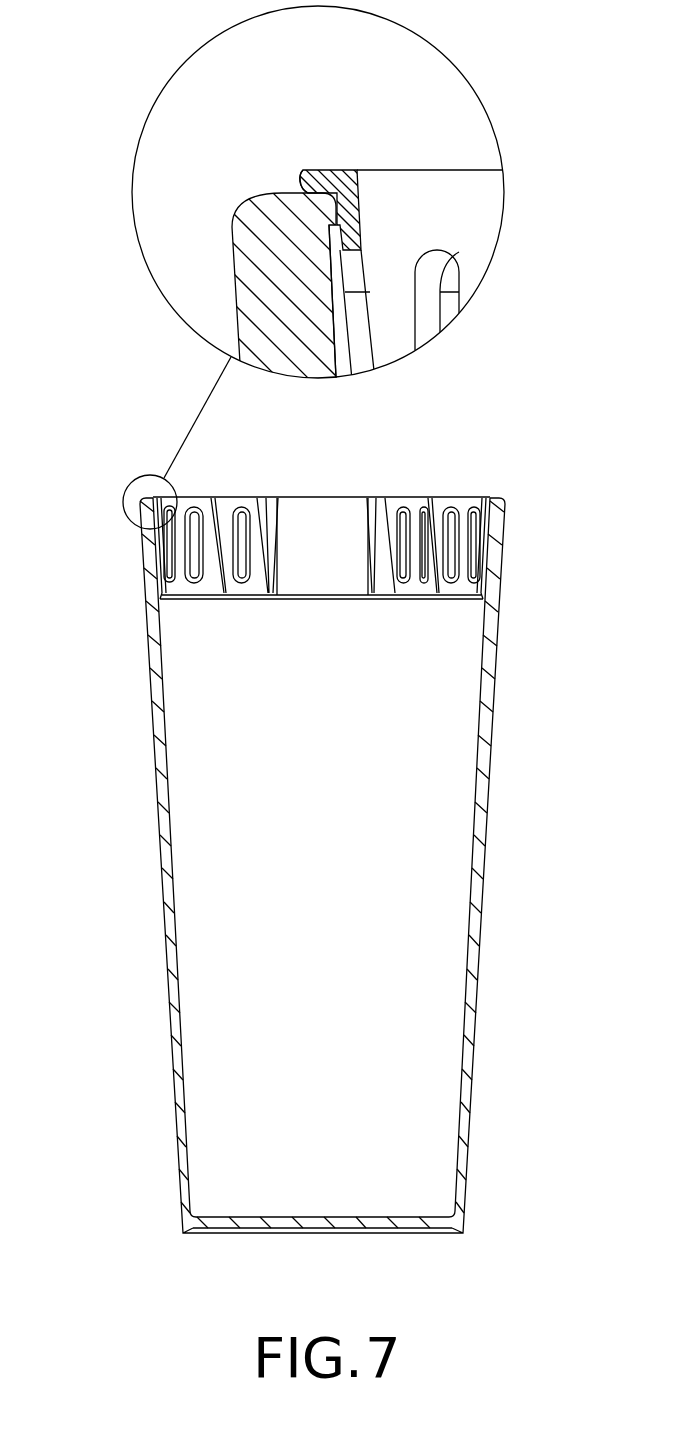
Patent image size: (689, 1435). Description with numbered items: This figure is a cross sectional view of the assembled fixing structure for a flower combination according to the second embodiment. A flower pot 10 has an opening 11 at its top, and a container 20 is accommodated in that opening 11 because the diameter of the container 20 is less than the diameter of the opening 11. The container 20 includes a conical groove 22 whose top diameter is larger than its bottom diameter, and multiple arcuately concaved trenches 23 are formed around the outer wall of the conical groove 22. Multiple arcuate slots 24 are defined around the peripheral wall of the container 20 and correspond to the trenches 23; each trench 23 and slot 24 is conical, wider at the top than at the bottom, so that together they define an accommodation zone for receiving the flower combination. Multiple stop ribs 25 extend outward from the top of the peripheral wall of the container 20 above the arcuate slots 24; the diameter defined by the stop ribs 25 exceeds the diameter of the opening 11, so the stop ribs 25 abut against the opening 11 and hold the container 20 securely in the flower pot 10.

The flower pot 10 is at (472, 1035).
The opening 11 is at (325, 248).
The container 20 is at (483, 552).
The conical groove 22 is at (315, 542).
The arcuately concaved trenches 23 is at (373, 533).
The arcuate slots 24 is at (465, 512).
The stop ribs 25 is at (303, 170).